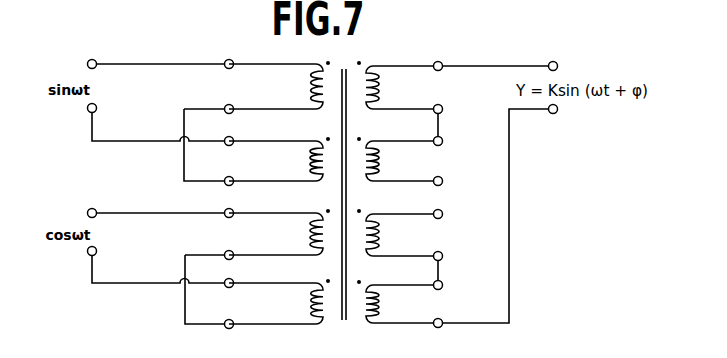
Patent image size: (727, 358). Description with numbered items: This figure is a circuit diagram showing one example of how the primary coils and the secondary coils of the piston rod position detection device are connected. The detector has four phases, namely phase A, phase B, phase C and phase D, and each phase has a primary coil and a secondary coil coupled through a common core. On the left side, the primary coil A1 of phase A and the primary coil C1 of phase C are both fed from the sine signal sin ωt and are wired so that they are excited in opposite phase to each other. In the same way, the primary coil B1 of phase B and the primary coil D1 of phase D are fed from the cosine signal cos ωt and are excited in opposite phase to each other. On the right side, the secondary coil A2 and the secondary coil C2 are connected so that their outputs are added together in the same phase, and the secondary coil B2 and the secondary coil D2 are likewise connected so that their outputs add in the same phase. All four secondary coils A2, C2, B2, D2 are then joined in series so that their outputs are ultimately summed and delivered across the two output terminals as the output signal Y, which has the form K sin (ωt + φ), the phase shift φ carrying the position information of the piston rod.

The phase A is at (229, 87).
The primary coil A1 is at (312, 98).
The phase B is at (229, 234).
The primary coil B1 is at (312, 242).
The phase C is at (229, 161).
The primary coil C1 is at (312, 168).
The phase D is at (229, 304).
The primary coil D1 is at (312, 310).
The secondary coil A2 is at (379, 88).
The secondary coil B2 is at (379, 234).
The secondary coil C2 is at (379, 160).
The secondary coil D2 is at (379, 303).